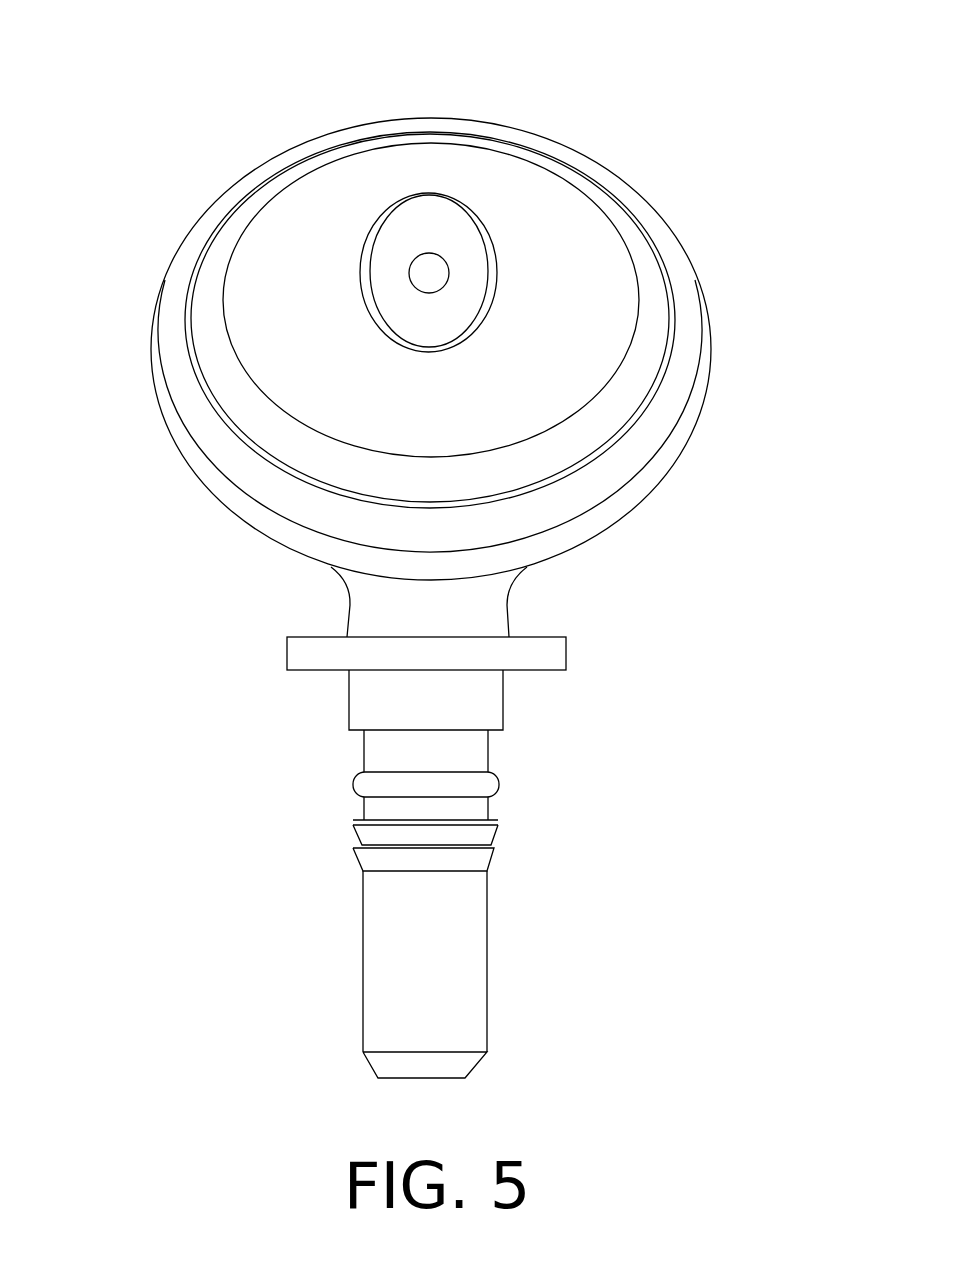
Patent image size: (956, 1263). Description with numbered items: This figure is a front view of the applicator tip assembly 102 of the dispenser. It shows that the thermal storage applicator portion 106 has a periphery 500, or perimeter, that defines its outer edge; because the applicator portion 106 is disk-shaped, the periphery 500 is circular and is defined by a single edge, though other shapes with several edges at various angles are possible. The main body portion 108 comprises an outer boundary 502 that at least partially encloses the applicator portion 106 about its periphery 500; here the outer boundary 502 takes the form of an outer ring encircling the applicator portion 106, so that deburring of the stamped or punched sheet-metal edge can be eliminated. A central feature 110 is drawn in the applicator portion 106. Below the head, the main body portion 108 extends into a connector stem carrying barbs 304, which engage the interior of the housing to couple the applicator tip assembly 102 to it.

The applicator tip assembly 102 is at (442, 544).
The outer boundary 502 is at (177, 270).
The periphery 500 is at (664, 338).
The thermal storage applicator portion 106 is at (582, 317).
The central aperture 110 is at (428, 272).
The barbs 304 is at (490, 851).
The main body portion 108 is at (410, 988).